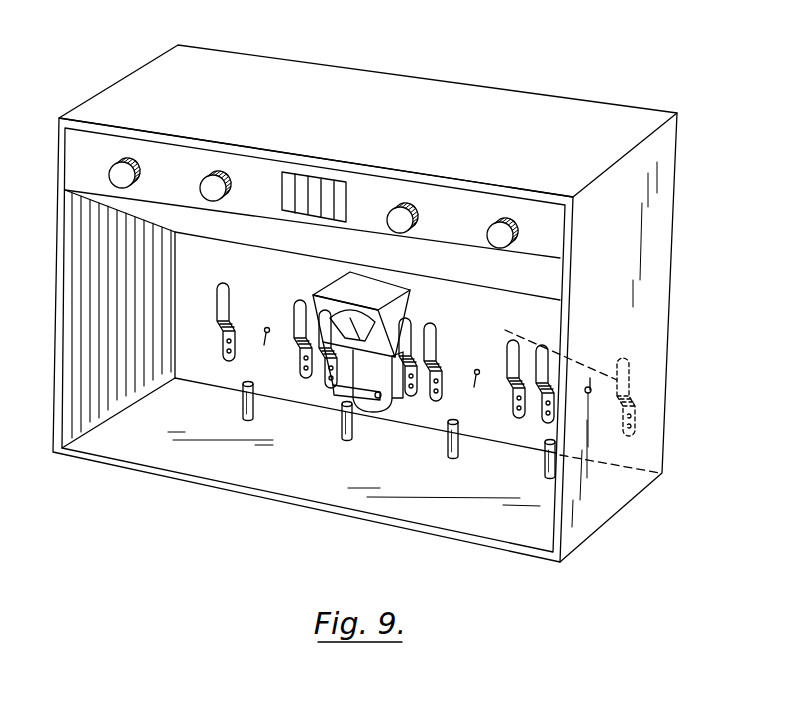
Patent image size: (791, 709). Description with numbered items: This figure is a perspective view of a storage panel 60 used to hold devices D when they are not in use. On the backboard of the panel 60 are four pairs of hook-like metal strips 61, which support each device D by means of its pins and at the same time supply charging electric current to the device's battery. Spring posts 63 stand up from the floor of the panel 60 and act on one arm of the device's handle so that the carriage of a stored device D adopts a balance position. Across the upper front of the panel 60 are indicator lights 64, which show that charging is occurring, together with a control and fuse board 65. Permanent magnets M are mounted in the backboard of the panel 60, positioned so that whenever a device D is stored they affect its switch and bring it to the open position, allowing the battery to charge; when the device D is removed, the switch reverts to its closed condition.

The panel 60 is at (612, 192).
The hook-like metal strips 61 is at (323, 335).
The spring posts 63 is at (345, 410).
The indicator lights 64 is at (124, 175).
The control and fuse board 65 is at (310, 197).
The device D is at (392, 313).
The permanent magnets M is at (370, 369).